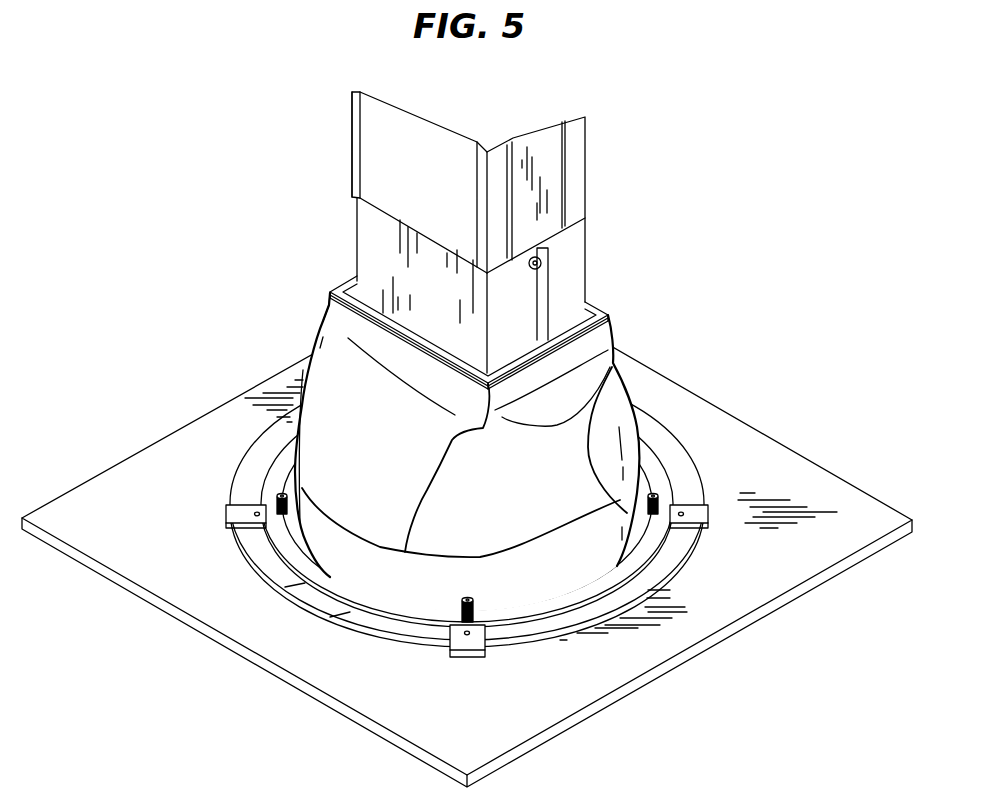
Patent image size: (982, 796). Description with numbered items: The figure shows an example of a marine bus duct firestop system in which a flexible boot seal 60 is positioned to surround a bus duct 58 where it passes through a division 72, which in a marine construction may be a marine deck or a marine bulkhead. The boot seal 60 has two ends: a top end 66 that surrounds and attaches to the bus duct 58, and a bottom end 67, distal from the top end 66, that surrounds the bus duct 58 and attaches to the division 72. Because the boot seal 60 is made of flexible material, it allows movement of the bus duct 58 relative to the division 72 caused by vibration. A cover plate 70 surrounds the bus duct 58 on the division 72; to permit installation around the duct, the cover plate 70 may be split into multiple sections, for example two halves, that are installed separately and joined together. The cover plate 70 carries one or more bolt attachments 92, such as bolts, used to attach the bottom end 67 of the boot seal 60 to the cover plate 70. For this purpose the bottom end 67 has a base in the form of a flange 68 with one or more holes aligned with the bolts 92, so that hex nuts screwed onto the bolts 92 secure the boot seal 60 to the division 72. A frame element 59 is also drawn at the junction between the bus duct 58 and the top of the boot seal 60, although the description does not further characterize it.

The bus duct 58 is at (568, 260).
The flange frame 59 is at (610, 327).
The boot seal 60 is at (570, 410).
The top end 66 is at (325, 307).
The bottom end 67 is at (353, 567).
The flange 68 is at (642, 553).
The cover plate 70 is at (622, 598).
The division 72 is at (833, 494).
The bolt attachments 92 is at (276, 499).